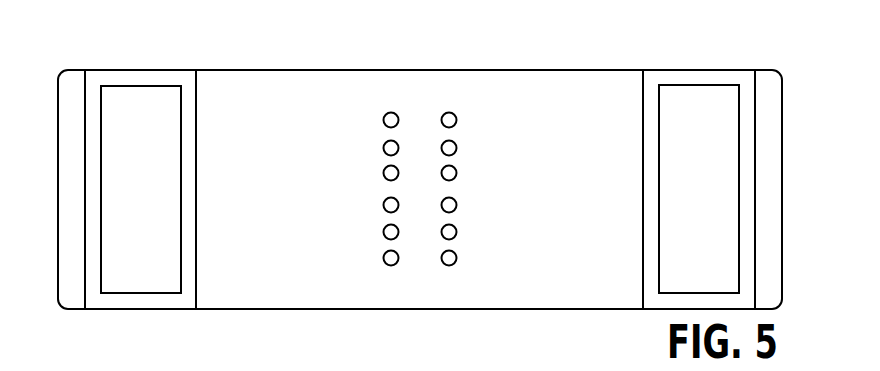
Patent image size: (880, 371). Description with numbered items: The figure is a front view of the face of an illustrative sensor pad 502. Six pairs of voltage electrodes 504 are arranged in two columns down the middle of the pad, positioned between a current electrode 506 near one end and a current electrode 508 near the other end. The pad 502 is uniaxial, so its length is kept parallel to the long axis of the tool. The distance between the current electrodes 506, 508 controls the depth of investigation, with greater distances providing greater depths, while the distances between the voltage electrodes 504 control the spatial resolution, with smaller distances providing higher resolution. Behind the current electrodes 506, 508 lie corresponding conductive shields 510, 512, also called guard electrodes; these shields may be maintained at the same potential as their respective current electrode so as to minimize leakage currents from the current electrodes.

The sensor pad 502 is at (292, 70).
The voltage electrodes 504 is at (444, 113).
The current electrode 506 is at (122, 84).
The current electrode 508 is at (659, 100).
The conductive shield 510 is at (192, 83).
The conductive shield 512 is at (690, 80).